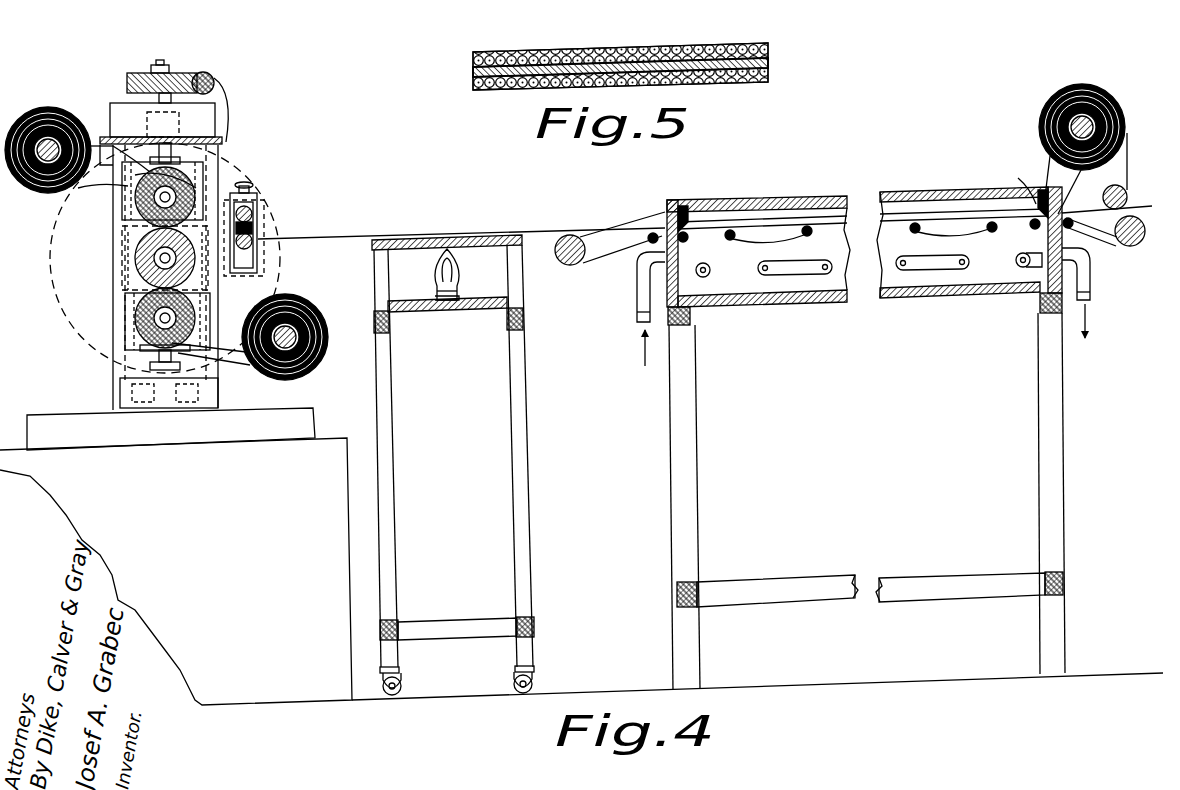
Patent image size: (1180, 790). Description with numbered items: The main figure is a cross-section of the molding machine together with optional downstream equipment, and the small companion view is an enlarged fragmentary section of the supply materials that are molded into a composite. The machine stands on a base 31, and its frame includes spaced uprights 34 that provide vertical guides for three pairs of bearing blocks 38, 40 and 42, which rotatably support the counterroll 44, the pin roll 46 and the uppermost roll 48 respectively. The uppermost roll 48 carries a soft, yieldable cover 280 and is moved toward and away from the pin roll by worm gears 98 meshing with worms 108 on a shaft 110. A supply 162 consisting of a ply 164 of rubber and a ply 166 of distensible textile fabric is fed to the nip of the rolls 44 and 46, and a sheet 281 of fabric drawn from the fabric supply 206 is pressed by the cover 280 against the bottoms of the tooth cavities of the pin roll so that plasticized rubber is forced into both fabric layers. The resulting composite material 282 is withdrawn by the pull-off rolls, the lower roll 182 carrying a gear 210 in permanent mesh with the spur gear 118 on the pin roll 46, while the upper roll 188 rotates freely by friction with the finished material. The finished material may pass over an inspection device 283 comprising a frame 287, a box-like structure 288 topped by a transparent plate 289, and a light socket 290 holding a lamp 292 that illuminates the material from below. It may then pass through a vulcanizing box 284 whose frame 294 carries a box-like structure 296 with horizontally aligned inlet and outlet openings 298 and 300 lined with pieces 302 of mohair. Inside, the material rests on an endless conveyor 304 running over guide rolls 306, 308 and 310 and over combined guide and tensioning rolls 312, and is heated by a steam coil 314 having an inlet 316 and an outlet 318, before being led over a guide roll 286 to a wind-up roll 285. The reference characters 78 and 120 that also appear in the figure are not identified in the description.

In FIG. 4, the base 31 is at (176, 571).
In FIG. 4, the upright 34 is at (122, 350).
In FIG. 4, the bearing blocks 38 is at (132, 340).
In FIG. 4, the bearing blocks 40 is at (128, 244).
In FIG. 4, the bearing blocks 42 is at (112, 135).
In FIG. 4, the counterroll 44 is at (150, 318).
In FIG. 4, the pin roll 46 is at (140, 258).
In FIG. 4, the uppermost roll 48 is at (196, 190).
In FIG. 4, the support plate 78 is at (92, 426).
In FIG. 4, the worm gears 98 is at (180, 73).
In FIG. 4, the worms 108 is at (226, 87).
In FIG. 4, the shaft 110 is at (213, 76).
In FIG. 4, the spur gear 118 is at (130, 287).
In FIG. 4, the guard ring 120 is at (68, 316).
In FIG. 4, the supply of material 162 is at (316, 364).
In FIG. 5, the layer of rubber 164 is at (768, 63).
In FIG. 4, the layer of rubber 164 is at (252, 377).
In FIG. 5, the layer of distensible textile fabric 166 is at (750, 85).
In FIG. 4, the layer of distensible textile fabric 166 is at (246, 362).
In FIG. 4, the lower pull-off roll 182 is at (258, 252).
In FIG. 4, the upper pull-off roll 188 is at (253, 214).
In FIG. 4, the supply of distensible fabric 206 is at (40, 122).
In FIG. 4, the gear 210 is at (286, 219).
In FIG. 4, the soft cover 280 is at (178, 192).
In FIG. 5, the sheet of fabric 281 is at (698, 52).
In FIG. 4, the sheet of fabric 281 is at (126, 195).
In FIG. 5, the composite material 282 is at (549, 50).
In FIG. 4, the composite material 282 is at (306, 238).
In FIG. 4, the inspection device 283 is at (527, 260).
In FIG. 4, the vulcanizing box 284 is at (838, 198).
In FIG. 4, the wind-up roll 285 is at (1126, 128).
In FIG. 4, the guide roll 286 is at (1125, 192).
In FIG. 4, the frame 287 is at (524, 500).
In FIG. 4, the box-like structure 288 is at (523, 305).
In FIG. 4, the transparent plate 289 is at (420, 241).
In FIG. 4, the light socket 290 is at (455, 296).
In FIG. 4, the lamp 292 is at (440, 262).
In FIG. 4, the frame 294 is at (1066, 491).
In FIG. 4, the box-like structure 296 is at (845, 301).
In FIG. 4, the inlet opening 298 is at (666, 216).
In FIG. 4, the outlet opening 300 is at (1046, 230).
In FIG. 4, the pieces of mohair 302 is at (690, 213).
In FIG. 4, the endless conveyor 304 is at (779, 231).
In FIG. 4, the guide roll 306 is at (573, 236).
In FIG. 4, the guide roll 308 is at (760, 240).
In FIG. 4, the guide roll 310 is at (1141, 241).
In FIG. 4, the combined guide and tensioning rolls 312 is at (644, 246).
In FIG. 4, the steam coil 314 is at (707, 278).
In FIG. 4, the inlet 316 is at (638, 312).
In FIG. 4, the outlet 318 is at (1091, 312).